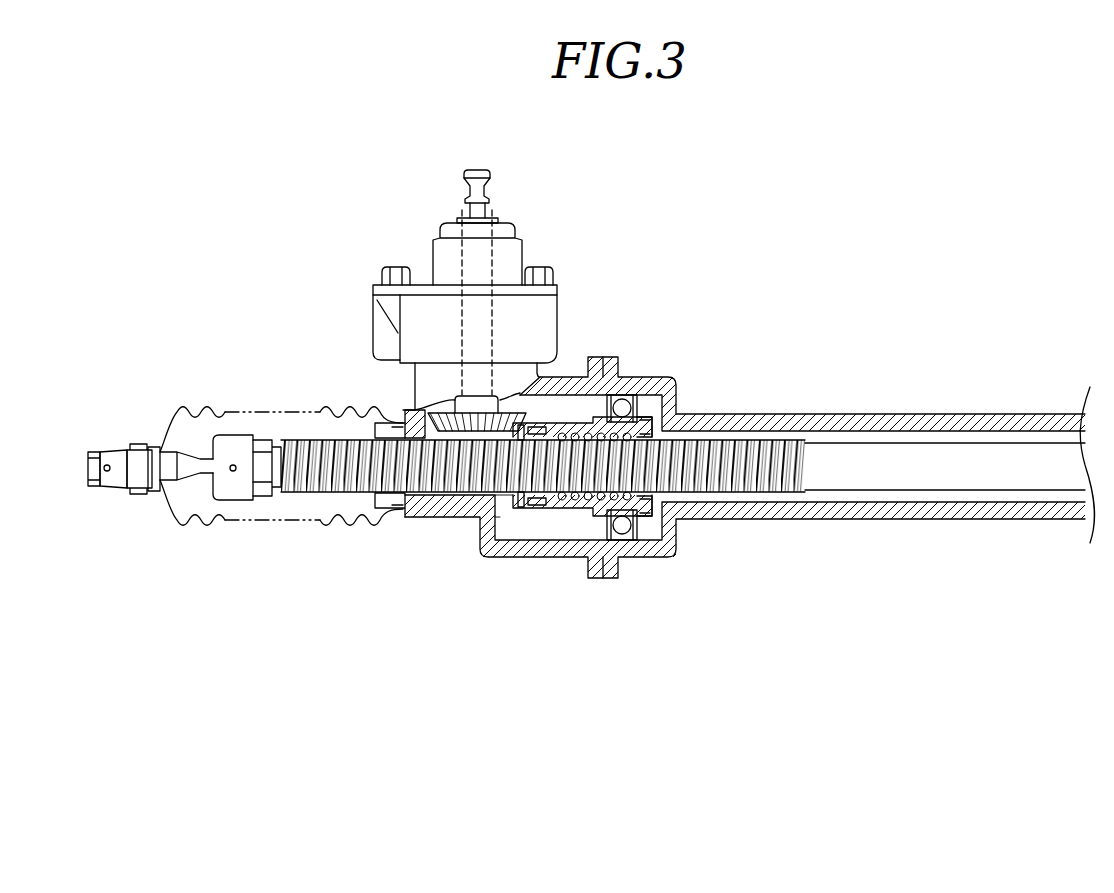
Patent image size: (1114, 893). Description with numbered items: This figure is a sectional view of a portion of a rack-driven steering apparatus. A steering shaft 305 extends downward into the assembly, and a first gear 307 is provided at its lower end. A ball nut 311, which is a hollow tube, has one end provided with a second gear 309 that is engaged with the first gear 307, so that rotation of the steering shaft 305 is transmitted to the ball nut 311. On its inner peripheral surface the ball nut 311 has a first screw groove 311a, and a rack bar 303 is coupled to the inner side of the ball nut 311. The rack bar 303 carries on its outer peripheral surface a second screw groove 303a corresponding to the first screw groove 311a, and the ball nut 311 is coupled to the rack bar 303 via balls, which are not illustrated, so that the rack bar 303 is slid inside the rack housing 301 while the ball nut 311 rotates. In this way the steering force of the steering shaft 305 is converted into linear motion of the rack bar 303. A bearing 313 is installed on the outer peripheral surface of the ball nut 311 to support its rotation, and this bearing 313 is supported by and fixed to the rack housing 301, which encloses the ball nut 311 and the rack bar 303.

The rack housing 301 is at (816, 512).
The rack bar 303 is at (880, 455).
The second screw groove 303a is at (712, 488).
The steering shaft 305 is at (484, 193).
The first gear 307 is at (407, 423).
The second gear 309 is at (523, 512).
The ball nut 311 is at (581, 432).
The first screw groove 311a is at (640, 418).
The bearing 313 is at (622, 530).